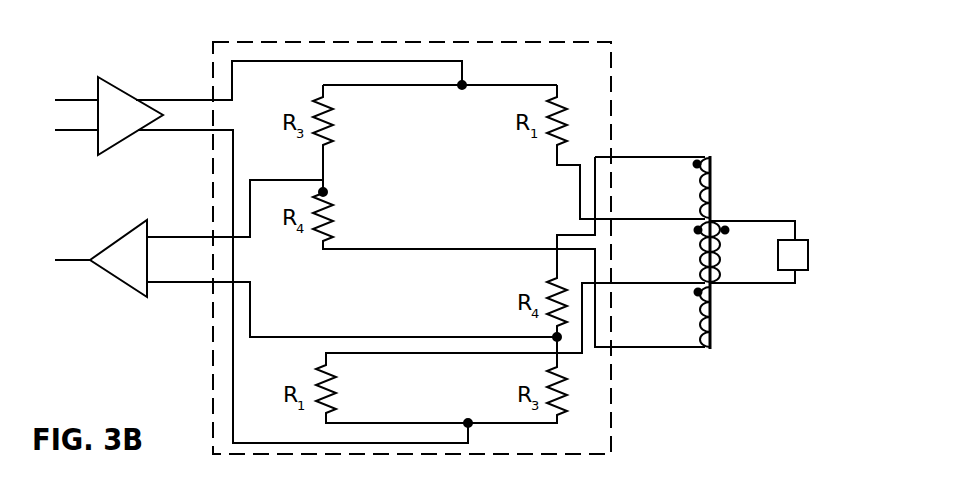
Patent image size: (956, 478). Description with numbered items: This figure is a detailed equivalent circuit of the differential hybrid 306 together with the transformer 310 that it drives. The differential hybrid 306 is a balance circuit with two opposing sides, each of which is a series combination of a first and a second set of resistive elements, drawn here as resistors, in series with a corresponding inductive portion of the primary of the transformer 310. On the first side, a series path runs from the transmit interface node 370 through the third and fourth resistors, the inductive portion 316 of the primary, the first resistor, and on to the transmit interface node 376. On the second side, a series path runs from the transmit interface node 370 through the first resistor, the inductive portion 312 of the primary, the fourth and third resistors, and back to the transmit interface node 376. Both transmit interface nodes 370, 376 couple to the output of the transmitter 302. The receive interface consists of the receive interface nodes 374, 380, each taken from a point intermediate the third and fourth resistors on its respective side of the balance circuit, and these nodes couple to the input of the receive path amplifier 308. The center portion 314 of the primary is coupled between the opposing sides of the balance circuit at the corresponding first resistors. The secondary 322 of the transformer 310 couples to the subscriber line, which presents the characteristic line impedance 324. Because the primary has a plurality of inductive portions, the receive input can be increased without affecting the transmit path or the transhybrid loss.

The transmitter 302 is at (124, 89).
The receive path amplifier 308 is at (147, 226).
The differential hybrid 306 is at (595, 43).
The transmit interface node 370 is at (464, 83).
The receive interface node 374 is at (325, 190).
The transmit interface node 376 is at (467, 421).
The receive interface node 380 is at (556, 335).
The transformer 310 is at (712, 248).
The inductive portion of the primary 312 is at (698, 160).
The center portion of the primary 314 is at (700, 257).
The inductive portion of the primary 316 is at (702, 344).
The secondary 322 is at (716, 287).
The characteristic line impedance 324 is at (796, 240).